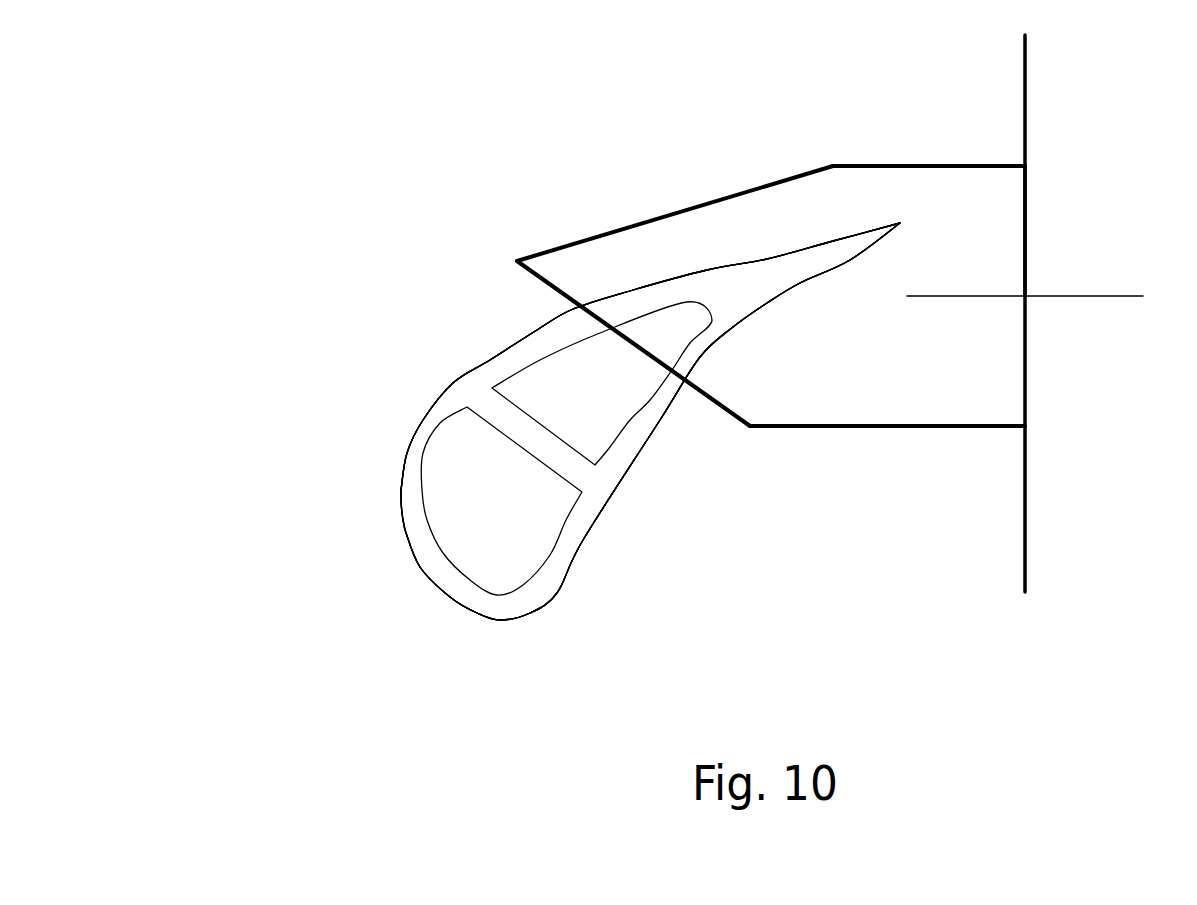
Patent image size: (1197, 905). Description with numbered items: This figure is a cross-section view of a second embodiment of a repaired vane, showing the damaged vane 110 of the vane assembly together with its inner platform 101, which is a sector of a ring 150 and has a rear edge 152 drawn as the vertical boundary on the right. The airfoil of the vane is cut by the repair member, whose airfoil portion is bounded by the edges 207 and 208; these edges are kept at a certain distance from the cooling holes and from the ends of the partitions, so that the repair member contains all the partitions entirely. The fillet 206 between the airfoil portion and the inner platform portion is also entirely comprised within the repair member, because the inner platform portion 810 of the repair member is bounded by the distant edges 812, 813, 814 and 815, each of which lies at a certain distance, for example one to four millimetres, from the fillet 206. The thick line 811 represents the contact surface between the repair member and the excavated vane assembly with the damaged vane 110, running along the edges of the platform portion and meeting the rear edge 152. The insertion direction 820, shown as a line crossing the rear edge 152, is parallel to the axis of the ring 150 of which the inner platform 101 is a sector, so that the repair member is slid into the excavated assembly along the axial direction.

The vane 110 is at (352, 582).
The inner platform 101 is at (650, 438).
The ring 150 is at (850, 652).
The rear edge 152 is at (1051, 313).
The fillet 206 is at (740, 250).
The edge of the airfoil portion 207 is at (577, 308).
The edge of the airfoil portion 208 is at (687, 383).
The inner platform portion 810 is at (988, 357).
The contact surface 811 is at (645, 343).
The distant edge 812 is at (675, 213).
The distant edge 813 is at (929, 142).
The distant edge 814 is at (1002, 231).
The distant edge 815 is at (887, 402).
The insertion direction 820 is at (1025, 272).